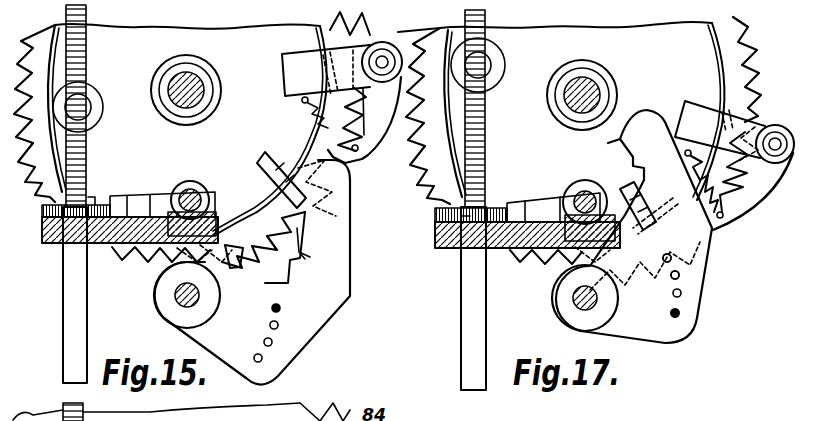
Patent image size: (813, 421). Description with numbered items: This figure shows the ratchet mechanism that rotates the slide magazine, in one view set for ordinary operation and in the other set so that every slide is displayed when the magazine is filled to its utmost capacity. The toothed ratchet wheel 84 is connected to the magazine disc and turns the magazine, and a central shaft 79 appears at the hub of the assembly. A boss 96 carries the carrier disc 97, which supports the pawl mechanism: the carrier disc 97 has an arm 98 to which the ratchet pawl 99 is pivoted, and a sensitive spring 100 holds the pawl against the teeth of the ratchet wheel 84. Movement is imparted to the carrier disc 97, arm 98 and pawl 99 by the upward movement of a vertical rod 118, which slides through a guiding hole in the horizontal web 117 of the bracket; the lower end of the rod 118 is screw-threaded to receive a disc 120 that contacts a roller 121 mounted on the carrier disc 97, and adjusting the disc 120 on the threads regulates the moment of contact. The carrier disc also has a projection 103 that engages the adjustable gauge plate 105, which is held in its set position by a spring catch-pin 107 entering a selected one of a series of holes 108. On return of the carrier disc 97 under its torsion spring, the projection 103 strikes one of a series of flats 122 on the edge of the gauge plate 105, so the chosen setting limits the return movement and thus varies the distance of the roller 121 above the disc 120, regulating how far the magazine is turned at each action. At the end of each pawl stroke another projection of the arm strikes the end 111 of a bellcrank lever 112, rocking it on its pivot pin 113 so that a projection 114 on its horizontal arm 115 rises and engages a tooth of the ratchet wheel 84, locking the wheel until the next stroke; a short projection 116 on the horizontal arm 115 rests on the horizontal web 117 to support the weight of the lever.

In FIG. 15, the ratchet wheel 84 is at (342, 28).
In FIG. 17, the ratchet wheel 84 is at (735, 43).
In FIG. 15, the carrier disc 97 is at (187, 129).
In FIG. 17, the carrier disc 97 is at (561, 111).
In FIG. 15, the boss 96 is at (214, 80).
In FIG. 17, the boss 96 is at (615, 85).
In FIG. 15, the shaft 79 is at (205, 112).
In FIG. 17, the shaft 79 is at (571, 108).
In FIG. 15, the roller 121 is at (97, 112).
In FIG. 17, the roller 121 is at (496, 62).
In FIG. 15, the disc 120 is at (97, 197).
In FIG. 17, the disc 120 is at (462, 216).
In FIG. 15, the short projection 116 is at (128, 195).
In FIG. 17, the short projection 116 is at (517, 199).
In FIG. 15, the horizontal arm 115 is at (152, 193).
In FIG. 17, the horizontal arm 115 is at (550, 196).
In FIG. 15, the pivot pin 113 is at (203, 188).
In FIG. 17, the pivot pin 113 is at (590, 180).
In FIG. 15, the arm 98 is at (342, 69).
In FIG. 17, the arm 98 is at (734, 132).
In FIG. 15, the ratchet pawl 99 is at (382, 108).
In FIG. 17, the ratchet pawl 99 is at (760, 178).
In FIG. 15, the sensitive spring 100 is at (318, 112).
In FIG. 17, the sensitive spring 100 is at (735, 230).
In FIG. 15, the projection 103 is at (278, 187).
In FIG. 15, the projection 114 is at (40, 208).
In FIG. 17, the projection 114 is at (440, 207).
In FIG. 15, the horizontal web 117 is at (103, 243).
In FIG. 17, the horizontal web 117 is at (500, 249).
In FIG. 15, the end of bellcrank lever 111 is at (244, 262).
In FIG. 15, the flats 122 is at (319, 245).
In FIG. 15, the gauge plate 105 is at (325, 268).
In FIG. 17, the gauge plate 105 is at (634, 226).
In FIG. 15, the bellcrank lever 112 is at (218, 273).
In FIG. 17, the bellcrank lever 112 is at (572, 264).
In FIG. 15, the vertical rod 118 is at (70, 318).
In FIG. 17, the vertical rod 118 is at (462, 318).
In FIG. 17, the holes 108 is at (683, 288).
In FIG. 17, the spring catch-pin 107 is at (682, 312).